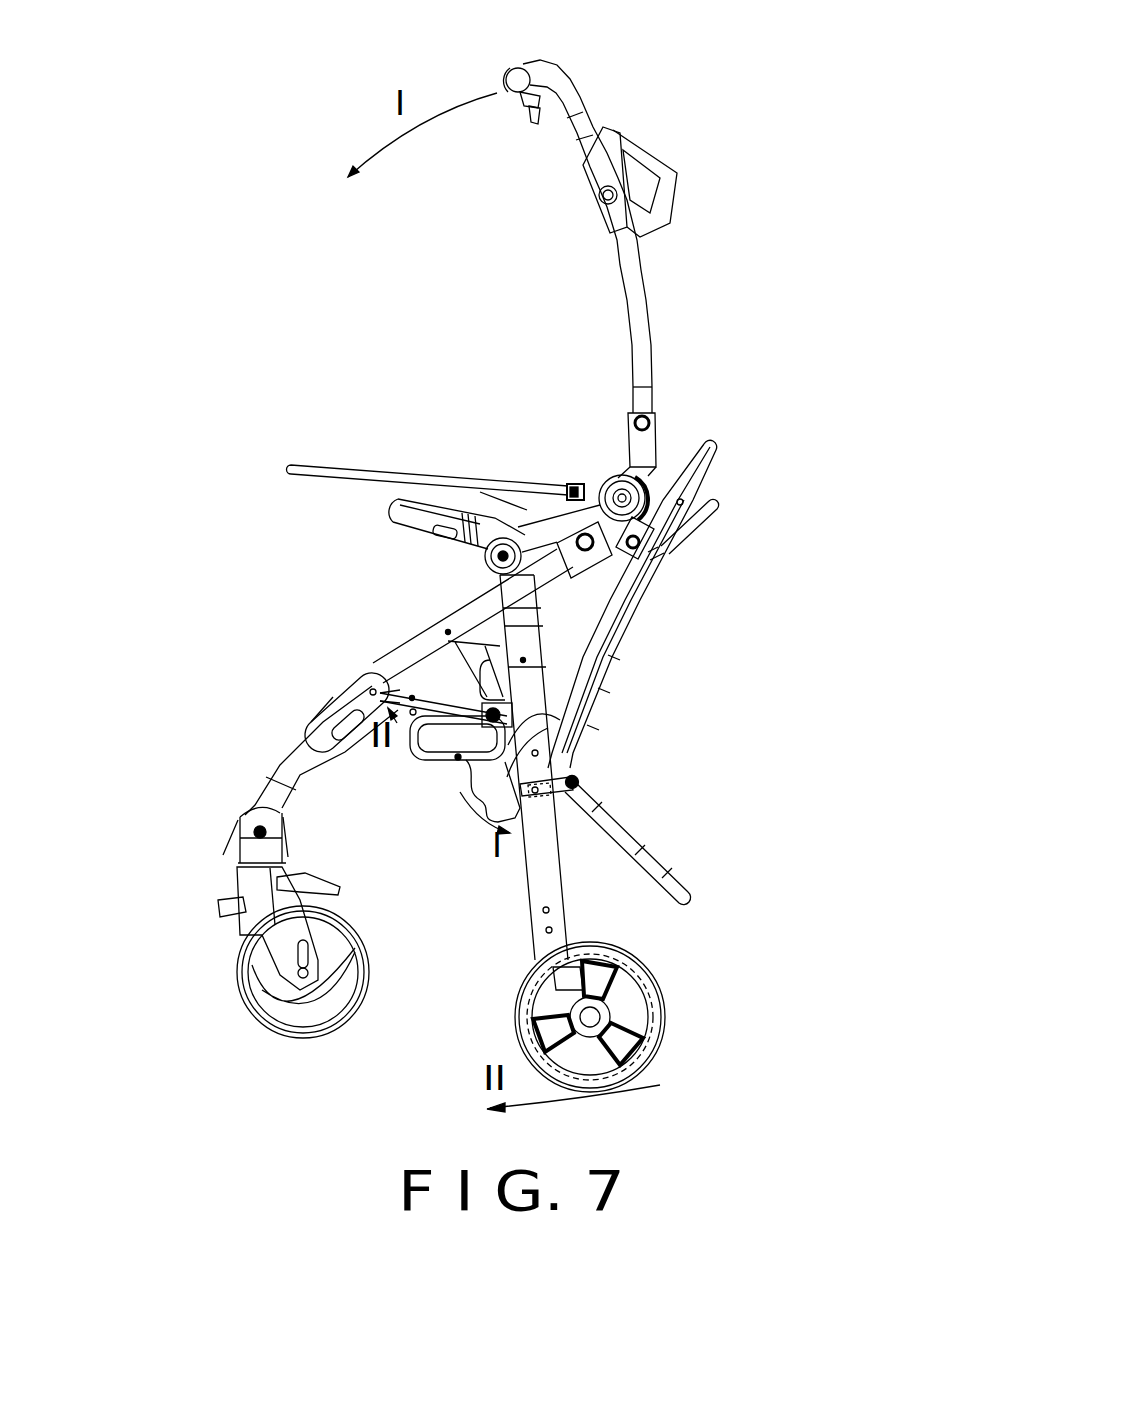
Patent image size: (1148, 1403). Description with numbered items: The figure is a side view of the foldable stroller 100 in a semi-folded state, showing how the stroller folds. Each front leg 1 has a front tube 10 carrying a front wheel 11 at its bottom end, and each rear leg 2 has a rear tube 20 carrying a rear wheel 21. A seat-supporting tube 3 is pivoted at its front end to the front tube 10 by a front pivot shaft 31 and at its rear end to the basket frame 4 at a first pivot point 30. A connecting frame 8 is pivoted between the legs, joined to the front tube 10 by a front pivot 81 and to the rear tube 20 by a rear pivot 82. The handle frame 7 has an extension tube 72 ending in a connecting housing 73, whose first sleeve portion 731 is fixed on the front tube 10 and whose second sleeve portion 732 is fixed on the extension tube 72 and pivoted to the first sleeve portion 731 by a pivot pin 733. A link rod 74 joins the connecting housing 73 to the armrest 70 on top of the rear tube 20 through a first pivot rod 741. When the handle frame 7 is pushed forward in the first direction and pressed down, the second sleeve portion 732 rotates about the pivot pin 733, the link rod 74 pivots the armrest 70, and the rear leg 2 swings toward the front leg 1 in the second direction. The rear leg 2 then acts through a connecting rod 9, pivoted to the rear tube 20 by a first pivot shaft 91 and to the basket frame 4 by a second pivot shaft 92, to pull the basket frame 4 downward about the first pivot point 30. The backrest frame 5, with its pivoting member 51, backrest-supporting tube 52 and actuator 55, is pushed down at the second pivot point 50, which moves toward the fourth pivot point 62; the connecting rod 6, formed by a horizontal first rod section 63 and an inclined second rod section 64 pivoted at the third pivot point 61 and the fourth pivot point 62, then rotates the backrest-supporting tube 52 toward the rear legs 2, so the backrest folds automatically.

The foldable stroller 100 is at (672, 135).
The front leg 1 is at (286, 862).
The front tube 10 is at (303, 760).
The front wheel 11 is at (257, 992).
The rear leg 2 is at (612, 833).
The rear tube 20 is at (553, 920).
The rear wheel 21 is at (643, 992).
The seat-supporting tube 3 is at (385, 680).
The first pivot point 30 is at (412, 698).
The front pivot shaft 31 is at (298, 689).
The basket frame 4 is at (663, 877).
The backrest frame 5 is at (682, 577).
The second pivot point 50 is at (535, 753).
The pivoting member 51 is at (507, 777).
The backrest-supporting tube 52 is at (690, 488).
The actuator 55 is at (712, 513).
The connecting rod 6 is at (405, 743).
The third pivot point 61 is at (458, 757).
The fourth pivot point 62 is at (400, 693).
The first rod section 63 is at (442, 748).
The second rod section 64 is at (413, 712).
The handle frame 7 is at (565, 62).
The armrest 70 is at (523, 530).
The extension tube 72 is at (633, 308).
The connecting housing 73 is at (608, 472).
The first sleeve portion 731 is at (560, 490).
The second sleeve portion 732 is at (647, 458).
The pivot pin 733 is at (622, 498).
The link rod 74 is at (642, 537).
The first pivot rod 741 is at (637, 610).
The connecting frame 8 is at (495, 624).
The front pivot 81 is at (460, 643).
The rear pivot 82 is at (523, 660).
The connecting rod 9 is at (557, 835).
The first pivot shaft 91 is at (538, 797).
The second pivot shaft 92 is at (572, 782).